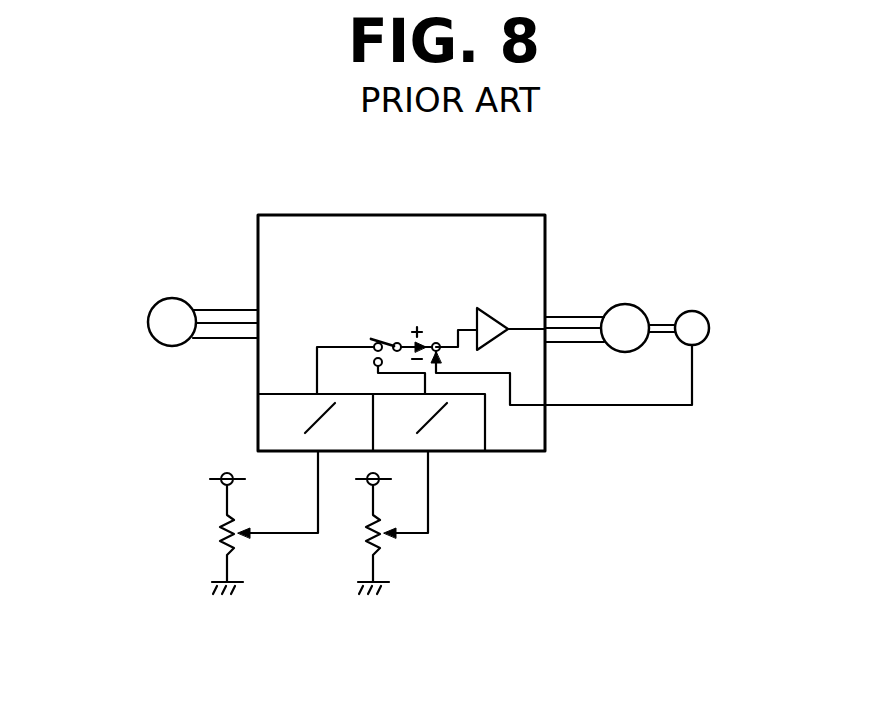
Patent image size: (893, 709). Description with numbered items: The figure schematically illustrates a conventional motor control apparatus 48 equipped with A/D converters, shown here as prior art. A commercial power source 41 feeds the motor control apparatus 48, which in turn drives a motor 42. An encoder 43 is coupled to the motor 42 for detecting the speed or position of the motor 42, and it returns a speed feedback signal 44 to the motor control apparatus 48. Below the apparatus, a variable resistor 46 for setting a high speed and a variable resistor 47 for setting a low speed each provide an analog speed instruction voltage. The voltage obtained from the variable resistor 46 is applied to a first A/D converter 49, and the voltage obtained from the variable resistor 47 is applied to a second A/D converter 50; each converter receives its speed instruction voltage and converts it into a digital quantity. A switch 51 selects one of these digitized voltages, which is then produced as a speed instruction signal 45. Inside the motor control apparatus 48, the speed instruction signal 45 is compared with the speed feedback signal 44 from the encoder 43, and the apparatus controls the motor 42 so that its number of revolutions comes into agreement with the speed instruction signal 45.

The commercial power source 41 is at (177, 298).
The motor 42 is at (630, 304).
The encoder 43 is at (692, 311).
The speed feedback signal 44 is at (516, 402).
The speed instruction signal 45 is at (397, 343).
The variable resistor for setting a high speed 46 is at (222, 538).
The variable resistor for setting a low speed 47 is at (365, 542).
The motor control apparatus 48 is at (488, 215).
The first A/D converter 49 is at (258, 416).
The second A/D converter 50 is at (477, 452).
The switch 51 is at (371, 339).